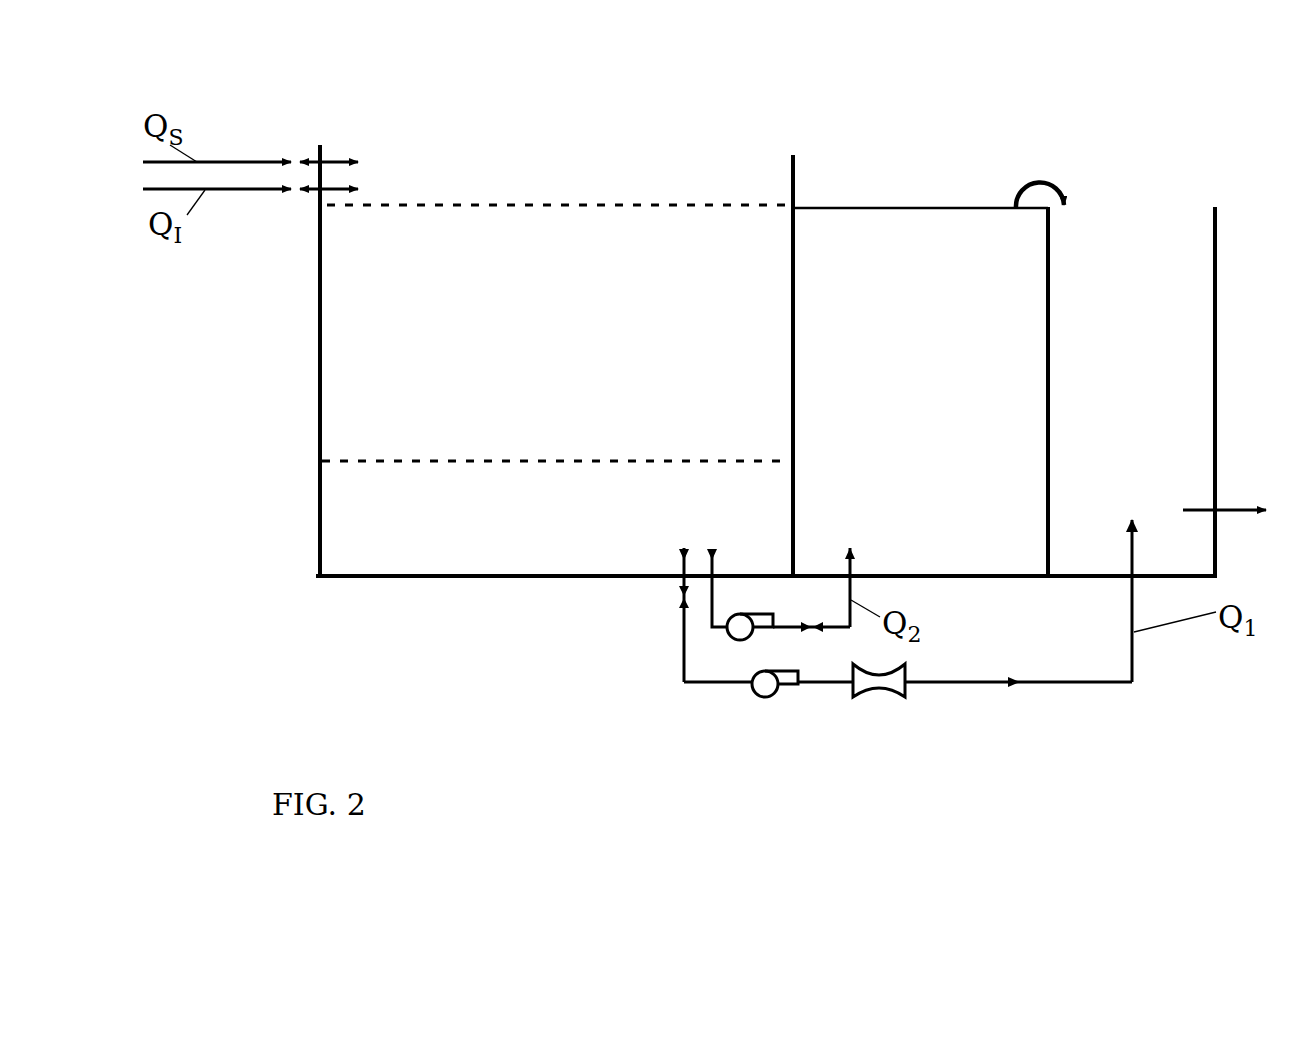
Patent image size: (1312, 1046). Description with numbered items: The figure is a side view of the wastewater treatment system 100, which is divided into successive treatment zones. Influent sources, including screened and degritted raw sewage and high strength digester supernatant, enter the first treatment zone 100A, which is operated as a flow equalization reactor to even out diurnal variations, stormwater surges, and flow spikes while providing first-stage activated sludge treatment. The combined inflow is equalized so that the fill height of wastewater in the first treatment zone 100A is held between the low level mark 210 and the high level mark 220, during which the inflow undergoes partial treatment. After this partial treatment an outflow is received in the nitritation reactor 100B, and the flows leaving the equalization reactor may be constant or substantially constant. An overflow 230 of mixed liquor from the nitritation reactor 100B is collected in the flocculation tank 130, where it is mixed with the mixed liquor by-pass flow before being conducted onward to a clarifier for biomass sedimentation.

The wastewater treatment system 100 is at (316, 312).
The first treatment zone 100A is at (556, 350).
The nitritation reactor 100B is at (920, 350).
The flocculation tank 130 is at (1157, 405).
The low level mark 210 is at (600, 462).
The high level mark 220 is at (585, 205).
The overflow 230 is at (1046, 182).